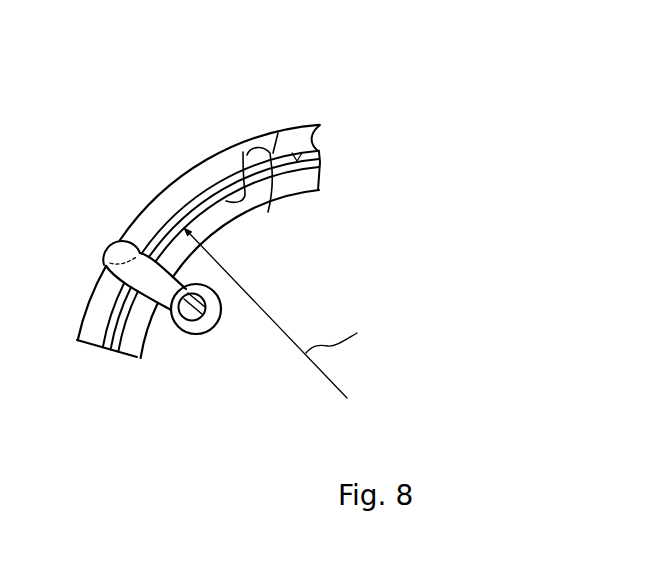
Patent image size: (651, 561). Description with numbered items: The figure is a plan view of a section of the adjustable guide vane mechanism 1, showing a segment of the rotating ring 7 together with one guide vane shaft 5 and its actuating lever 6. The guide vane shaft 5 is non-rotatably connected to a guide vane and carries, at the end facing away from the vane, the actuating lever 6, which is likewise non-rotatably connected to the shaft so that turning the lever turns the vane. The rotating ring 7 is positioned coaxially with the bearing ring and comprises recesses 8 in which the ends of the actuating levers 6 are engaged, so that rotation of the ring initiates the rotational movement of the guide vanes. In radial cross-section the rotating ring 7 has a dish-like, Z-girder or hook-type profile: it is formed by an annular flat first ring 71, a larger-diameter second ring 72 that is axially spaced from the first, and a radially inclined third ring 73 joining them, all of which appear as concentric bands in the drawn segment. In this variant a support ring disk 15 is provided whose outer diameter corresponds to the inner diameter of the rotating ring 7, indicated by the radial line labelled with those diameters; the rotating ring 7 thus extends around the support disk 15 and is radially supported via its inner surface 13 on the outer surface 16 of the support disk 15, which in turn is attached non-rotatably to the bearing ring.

The adjustable guide vane mechanism 1 is at (241, 231).
The guide vane shaft 5 is at (198, 309).
The actuating lever 6 is at (166, 305).
The rotating ring 7 is at (162, 180).
The recess 8 is at (108, 263).
The inner surface 13 is at (236, 176).
The support ring disk 15 is at (231, 235).
The outer surface 16 is at (297, 158).
The first ring 71 is at (124, 353).
The second ring 72 is at (94, 337).
The third ring 73 is at (112, 345).